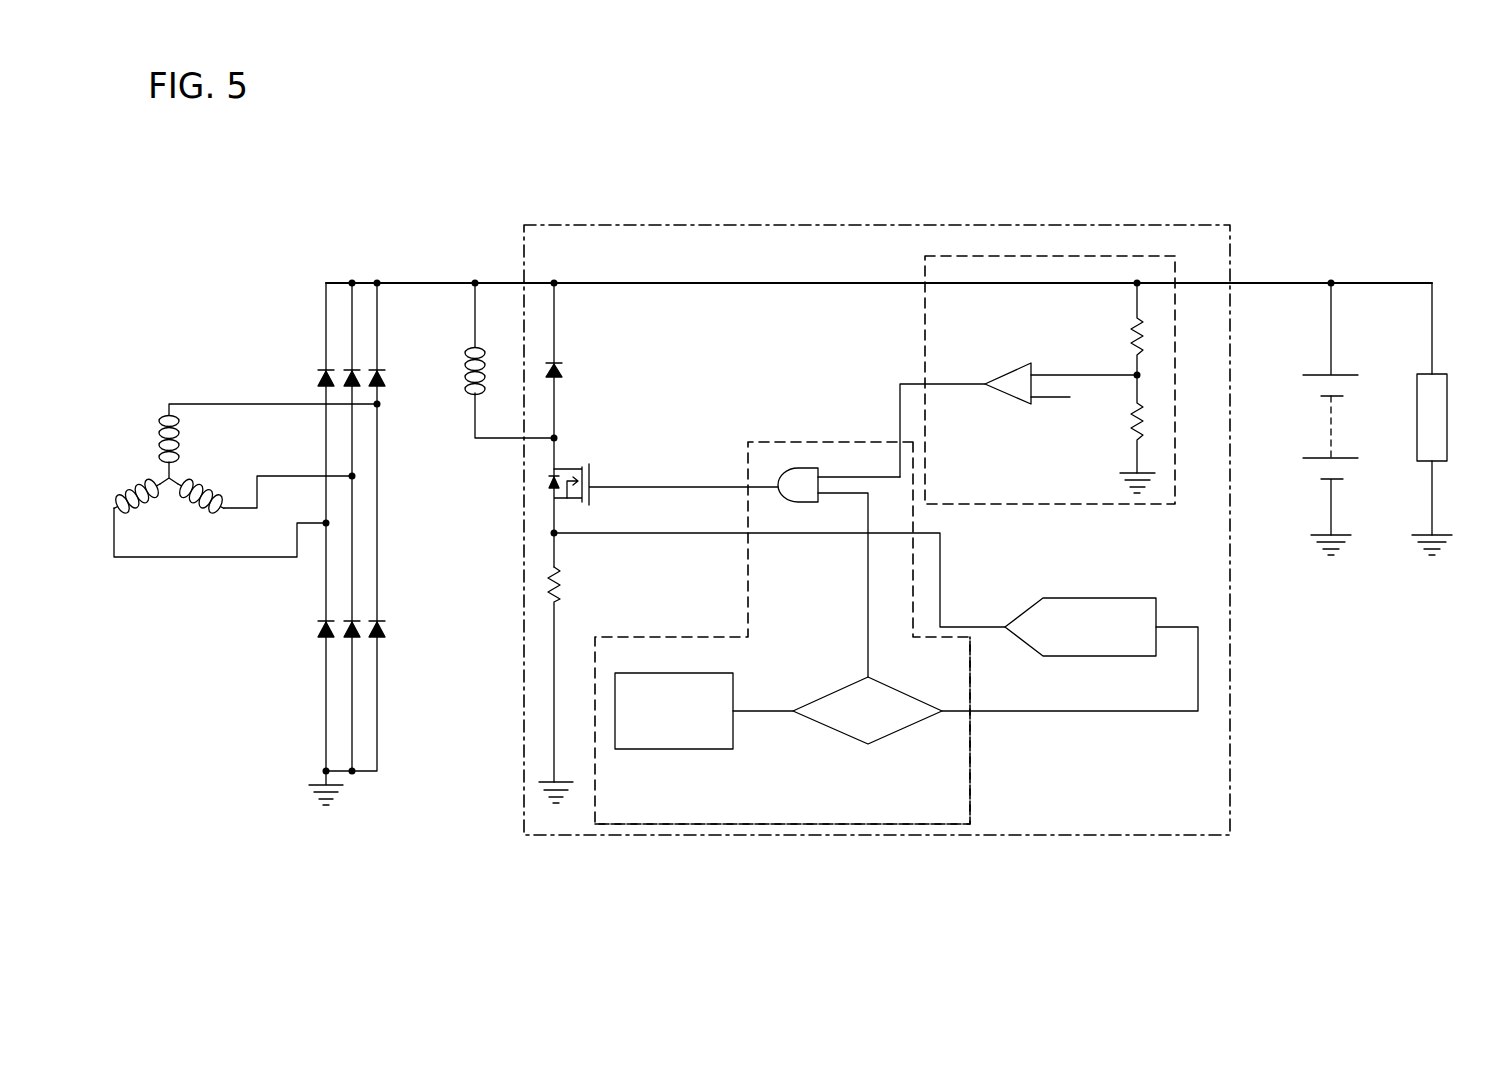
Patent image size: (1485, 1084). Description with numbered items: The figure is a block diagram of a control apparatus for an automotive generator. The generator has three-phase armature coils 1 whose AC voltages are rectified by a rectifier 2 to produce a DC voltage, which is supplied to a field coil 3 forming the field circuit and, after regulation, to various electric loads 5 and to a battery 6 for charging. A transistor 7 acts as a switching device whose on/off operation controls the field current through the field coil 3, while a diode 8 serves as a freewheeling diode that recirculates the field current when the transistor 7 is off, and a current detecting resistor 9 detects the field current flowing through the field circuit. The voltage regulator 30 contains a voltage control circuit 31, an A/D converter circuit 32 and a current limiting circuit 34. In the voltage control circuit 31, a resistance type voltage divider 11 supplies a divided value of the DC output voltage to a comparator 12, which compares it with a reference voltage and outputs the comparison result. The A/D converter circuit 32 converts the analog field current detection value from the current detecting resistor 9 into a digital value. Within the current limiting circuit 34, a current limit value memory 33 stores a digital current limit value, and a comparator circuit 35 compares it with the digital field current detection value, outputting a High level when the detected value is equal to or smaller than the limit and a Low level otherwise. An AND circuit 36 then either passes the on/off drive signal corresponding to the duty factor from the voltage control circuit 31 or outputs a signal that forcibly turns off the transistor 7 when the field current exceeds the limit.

The three-phase armature coils 1 is at (156, 406).
The rectifier 2 is at (334, 544).
The field coil 3 is at (466, 376).
The electric loads 5 is at (1435, 373).
The battery 6 is at (1340, 373).
The transistor 7 is at (548, 487).
The diode 8 is at (566, 372).
The current detecting resistor 9 is at (548, 588).
The resistance type voltage divider 11 is at (1131, 339).
The comparator 12 is at (1000, 367).
The voltage regulator 30 is at (835, 225).
The voltage control circuit 31 is at (1044, 256).
The A/D converter circuit 32 is at (1102, 598).
The current limit value memory 33 is at (672, 749).
The current limiting circuit 34 is at (1018, 758).
The comparator circuit 35 is at (833, 686).
The AND circuit 36 is at (786, 505).